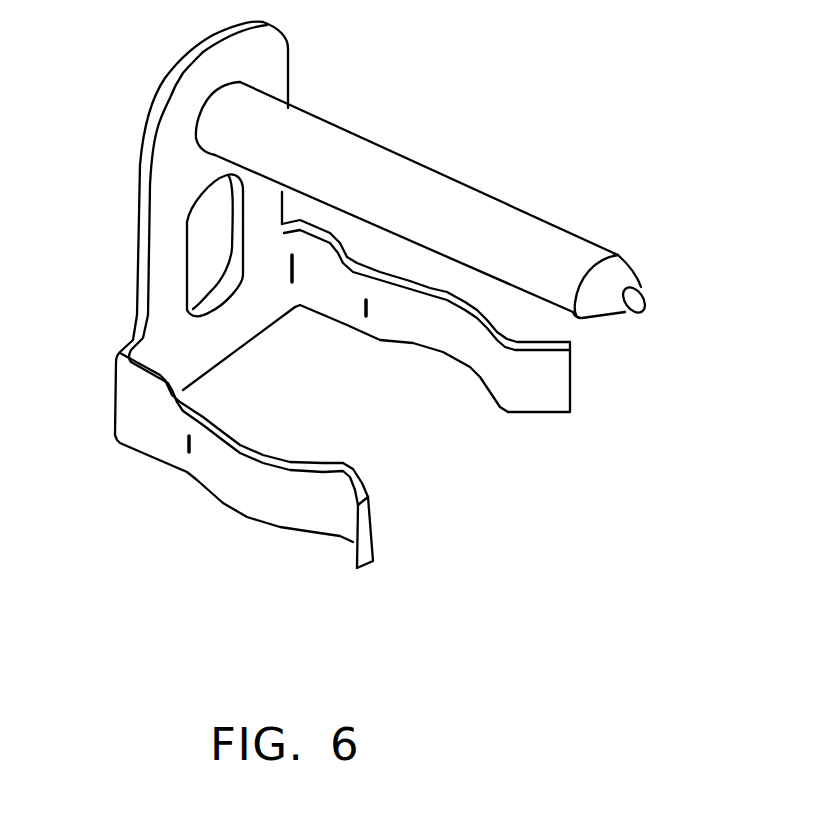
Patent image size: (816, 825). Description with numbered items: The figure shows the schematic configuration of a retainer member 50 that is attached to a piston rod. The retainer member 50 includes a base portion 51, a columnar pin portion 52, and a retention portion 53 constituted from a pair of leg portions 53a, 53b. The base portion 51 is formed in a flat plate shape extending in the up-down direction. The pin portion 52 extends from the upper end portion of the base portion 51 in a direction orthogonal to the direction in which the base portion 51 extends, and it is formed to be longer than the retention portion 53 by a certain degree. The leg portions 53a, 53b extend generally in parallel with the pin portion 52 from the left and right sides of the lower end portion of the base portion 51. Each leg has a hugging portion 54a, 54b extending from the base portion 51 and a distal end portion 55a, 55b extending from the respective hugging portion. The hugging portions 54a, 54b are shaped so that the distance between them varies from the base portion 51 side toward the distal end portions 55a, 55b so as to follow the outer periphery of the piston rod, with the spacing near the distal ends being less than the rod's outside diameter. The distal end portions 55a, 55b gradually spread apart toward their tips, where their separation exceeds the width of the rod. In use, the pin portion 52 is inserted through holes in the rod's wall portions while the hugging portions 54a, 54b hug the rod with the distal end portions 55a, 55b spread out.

The retainer member 50 is at (398, 95).
The base portion 51 is at (170, 158).
The pin portion 52 is at (433, 200).
The retention portion 53 is at (217, 550).
The leg portion 53a is at (218, 518).
The leg portion 53b is at (443, 370).
The hugging portion 54a is at (220, 475).
The hugging portion 54b is at (423, 328).
The distal end portion 55a is at (352, 540).
The distal end portion 55b is at (547, 388).